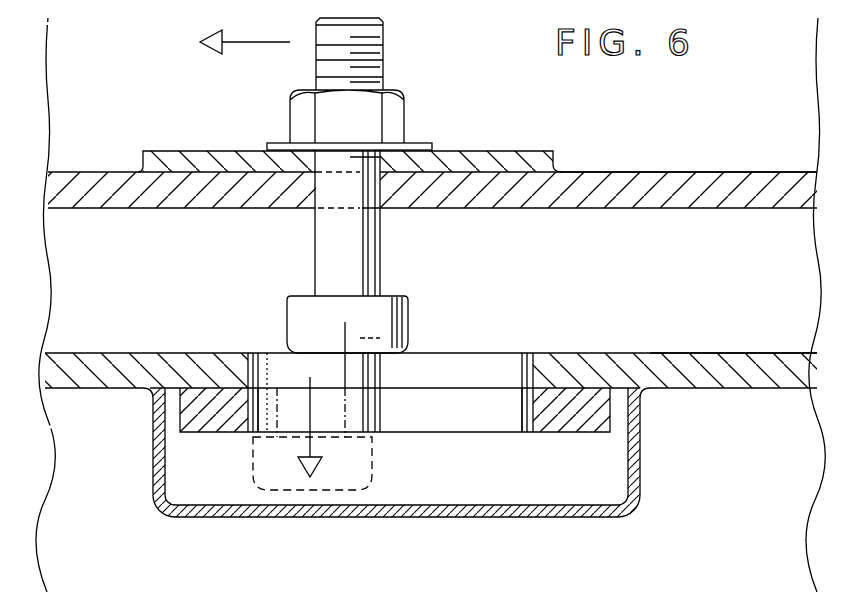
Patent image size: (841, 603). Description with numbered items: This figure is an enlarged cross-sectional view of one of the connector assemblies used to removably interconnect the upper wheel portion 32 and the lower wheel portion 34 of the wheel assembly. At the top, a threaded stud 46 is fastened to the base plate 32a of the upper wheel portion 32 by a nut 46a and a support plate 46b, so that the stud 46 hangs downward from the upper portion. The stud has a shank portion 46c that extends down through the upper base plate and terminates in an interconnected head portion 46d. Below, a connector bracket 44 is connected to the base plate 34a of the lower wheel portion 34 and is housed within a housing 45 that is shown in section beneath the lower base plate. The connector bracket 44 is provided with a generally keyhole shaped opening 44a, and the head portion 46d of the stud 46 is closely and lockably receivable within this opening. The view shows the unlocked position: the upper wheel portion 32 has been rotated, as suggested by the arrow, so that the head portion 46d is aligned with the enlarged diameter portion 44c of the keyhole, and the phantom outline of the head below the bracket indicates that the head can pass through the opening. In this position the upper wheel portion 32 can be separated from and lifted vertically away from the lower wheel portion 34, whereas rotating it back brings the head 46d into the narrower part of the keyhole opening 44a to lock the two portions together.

The upper wheel portion 32 is at (75, 173).
The base plate of first wheel portion 32a is at (640, 172).
The lower wheel portion 34 is at (95, 353).
The base plate of second wheel portion 34a is at (665, 353).
The connector bracket 44 is at (589, 392).
The keyhole shaped opening 44a is at (523, 415).
The enlarged diameter portion of keyhole 44c is at (250, 407).
The housing 45 is at (225, 518).
The threaded stud 46 is at (383, 52).
The nut 46a is at (398, 108).
The support plate 46b is at (535, 150).
The shank portion 46c is at (381, 250).
The head portion 46d is at (397, 477).